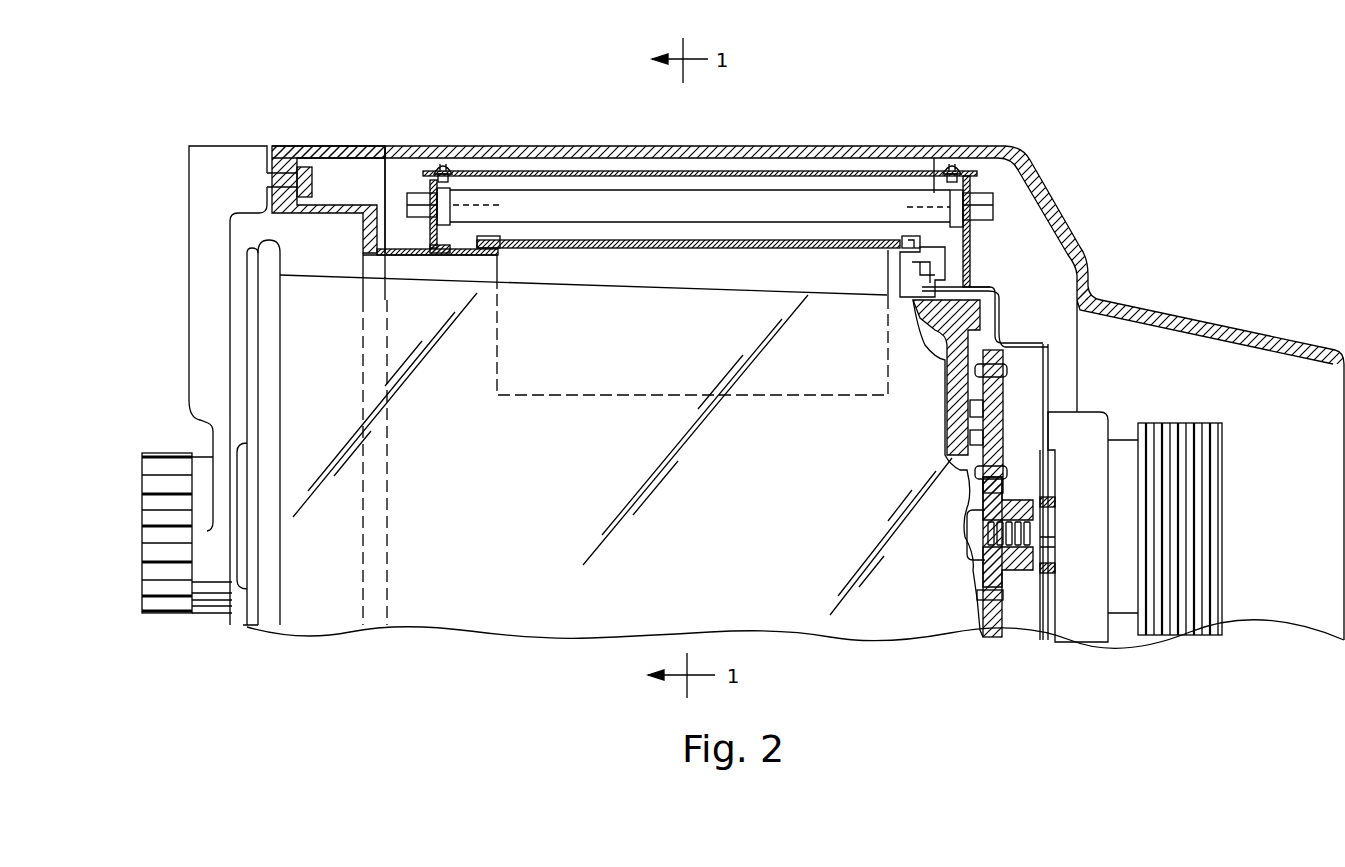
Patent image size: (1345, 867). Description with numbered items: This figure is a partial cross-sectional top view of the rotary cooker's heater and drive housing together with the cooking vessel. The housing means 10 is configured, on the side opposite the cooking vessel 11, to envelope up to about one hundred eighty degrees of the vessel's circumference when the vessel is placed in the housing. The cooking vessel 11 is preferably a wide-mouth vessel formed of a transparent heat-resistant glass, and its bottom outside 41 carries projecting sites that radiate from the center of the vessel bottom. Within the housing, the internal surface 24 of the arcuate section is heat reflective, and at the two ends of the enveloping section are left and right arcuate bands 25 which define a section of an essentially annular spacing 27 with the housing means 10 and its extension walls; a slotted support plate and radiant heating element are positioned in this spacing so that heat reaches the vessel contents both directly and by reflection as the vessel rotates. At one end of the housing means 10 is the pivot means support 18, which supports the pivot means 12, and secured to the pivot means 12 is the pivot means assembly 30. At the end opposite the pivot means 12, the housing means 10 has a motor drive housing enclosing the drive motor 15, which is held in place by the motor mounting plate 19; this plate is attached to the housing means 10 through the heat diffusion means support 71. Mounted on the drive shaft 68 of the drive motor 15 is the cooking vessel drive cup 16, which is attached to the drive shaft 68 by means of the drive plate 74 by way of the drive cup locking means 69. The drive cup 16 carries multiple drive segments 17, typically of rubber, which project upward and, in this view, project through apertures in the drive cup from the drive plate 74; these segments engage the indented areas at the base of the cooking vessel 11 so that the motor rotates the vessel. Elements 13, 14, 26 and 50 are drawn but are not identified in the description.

The housing means 10 is at (745, 150).
The cooking vessel 11 is at (830, 303).
The pivot means 12 is at (200, 155).
The roller 13 is at (513, 202).
The housing side wall 14 is at (1288, 345).
The drive motor 15 is at (1083, 430).
The cooking vessel drive cup 16 is at (943, 263).
The drive segments 17 is at (985, 330).
The pivot means support 18 is at (366, 150).
The motor mounting plate 19 is at (1047, 362).
The internal surface 24 is at (793, 172).
The arcuate bands 25 is at (432, 182).
The guide plate 26 is at (612, 243).
The annular spacing 27 is at (838, 190).
The pivot means assembly 30 is at (267, 370).
The bottom outside of the cooking vessel 41 is at (997, 296).
The strip 50 is at (252, 290).
The drive shaft 68 is at (983, 558).
The drive cup locking means 69 is at (990, 630).
The heat diffusion means support 71 is at (403, 247).
The drive plate 74 is at (993, 568).